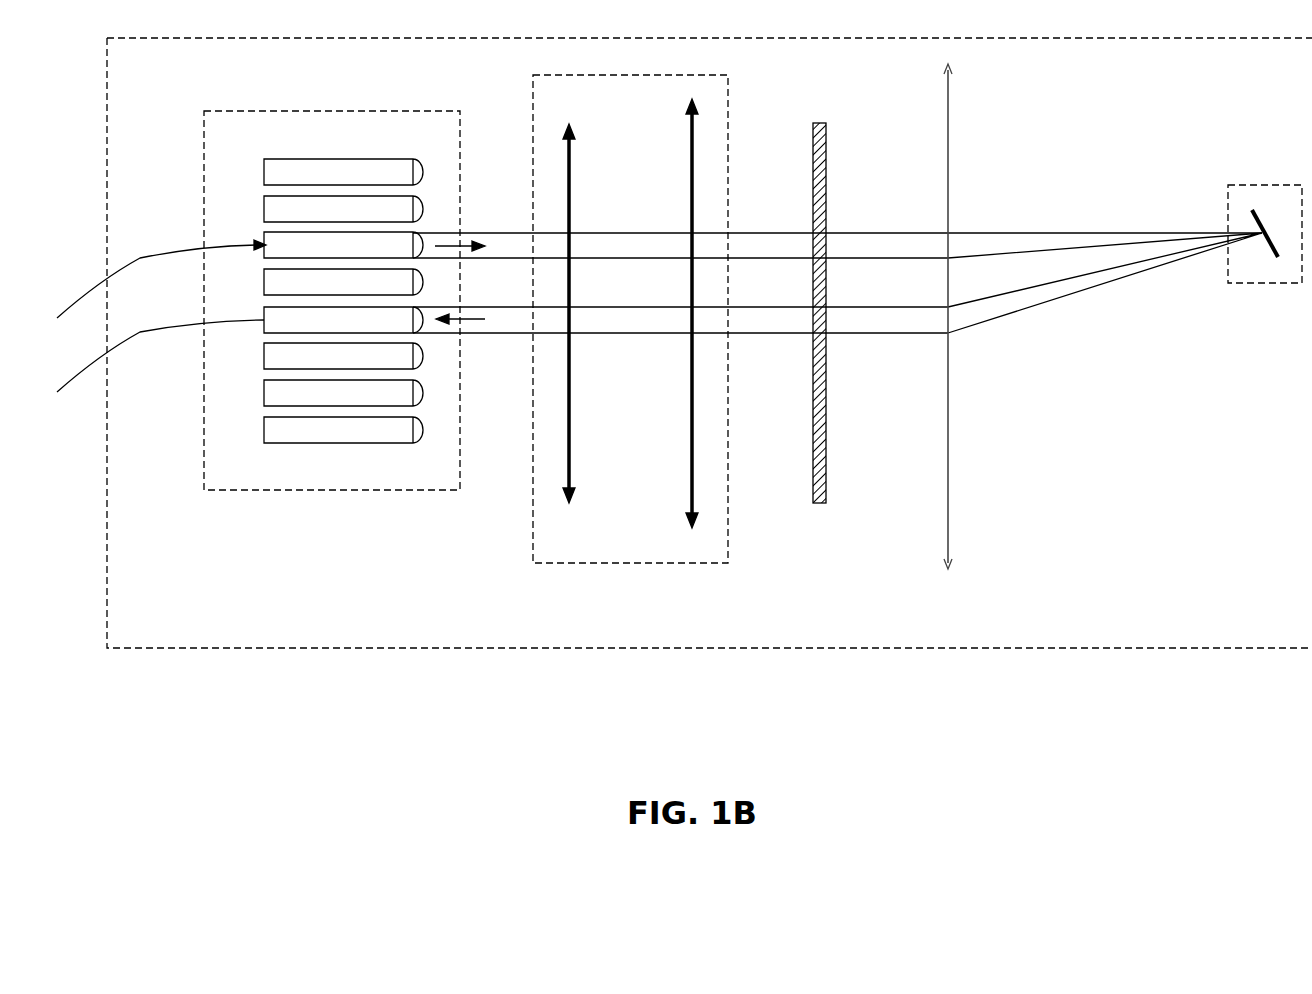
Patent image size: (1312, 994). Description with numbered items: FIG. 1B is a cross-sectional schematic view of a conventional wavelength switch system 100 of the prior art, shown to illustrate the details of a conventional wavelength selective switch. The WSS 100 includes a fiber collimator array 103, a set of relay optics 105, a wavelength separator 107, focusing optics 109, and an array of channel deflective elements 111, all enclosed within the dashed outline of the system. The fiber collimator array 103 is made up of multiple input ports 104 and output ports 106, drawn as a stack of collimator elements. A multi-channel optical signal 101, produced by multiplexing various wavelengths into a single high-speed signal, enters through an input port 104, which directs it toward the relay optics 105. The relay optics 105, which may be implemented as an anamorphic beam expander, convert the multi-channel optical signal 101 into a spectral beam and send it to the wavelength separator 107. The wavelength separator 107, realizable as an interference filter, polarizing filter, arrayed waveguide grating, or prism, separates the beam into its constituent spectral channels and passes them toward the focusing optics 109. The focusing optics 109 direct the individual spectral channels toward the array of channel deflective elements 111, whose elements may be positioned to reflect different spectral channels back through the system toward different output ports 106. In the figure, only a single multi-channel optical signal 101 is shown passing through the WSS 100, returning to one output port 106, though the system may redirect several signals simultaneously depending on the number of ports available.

The wavelength switch system 100 is at (228, 649).
The multi-channel optical signal 101 is at (152, 256).
The fiber collimator array 103 is at (332, 327).
The input port 104 is at (264, 236).
The relay optics 105 is at (621, 564).
The output port 106 is at (264, 313).
The wavelength separator 107 is at (818, 123).
The focusing optics 109 is at (950, 571).
The array of channel deflective elements 111 is at (1268, 284).